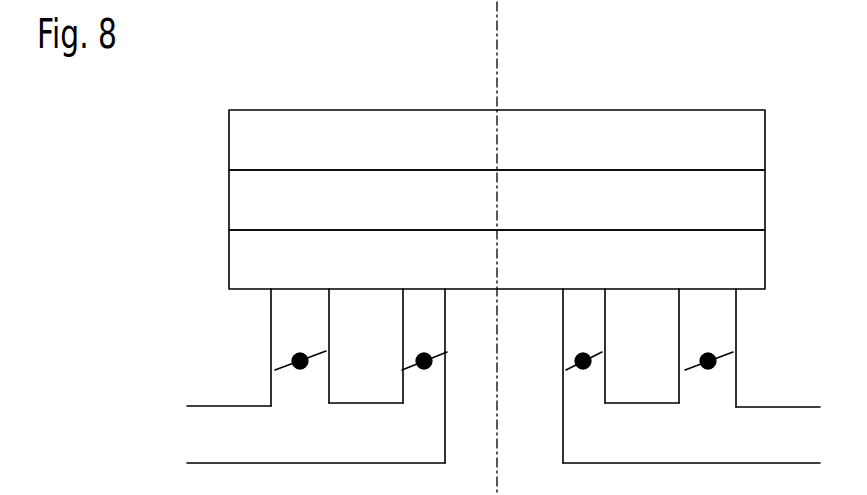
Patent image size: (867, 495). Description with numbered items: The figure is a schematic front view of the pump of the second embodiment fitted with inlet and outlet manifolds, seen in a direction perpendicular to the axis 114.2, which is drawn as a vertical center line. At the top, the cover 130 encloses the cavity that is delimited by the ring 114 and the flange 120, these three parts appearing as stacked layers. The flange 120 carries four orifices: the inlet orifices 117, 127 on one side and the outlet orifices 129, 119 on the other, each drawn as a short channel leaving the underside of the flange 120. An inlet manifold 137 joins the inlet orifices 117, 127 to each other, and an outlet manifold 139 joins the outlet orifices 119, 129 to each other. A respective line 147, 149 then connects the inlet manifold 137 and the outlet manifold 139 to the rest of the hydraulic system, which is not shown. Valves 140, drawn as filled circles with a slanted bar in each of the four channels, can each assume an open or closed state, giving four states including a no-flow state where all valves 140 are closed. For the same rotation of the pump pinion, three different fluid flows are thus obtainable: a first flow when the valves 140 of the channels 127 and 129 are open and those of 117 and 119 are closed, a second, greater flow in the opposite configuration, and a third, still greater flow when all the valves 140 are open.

The axis 114.2 is at (500, 30).
The cover 130 is at (670, 157).
The ring 114 is at (670, 216).
The flange 120 is at (670, 274).
The inlet orifice 117 is at (300, 331).
The inlet orifice 127 is at (424, 360).
The outlet orifice 129 is at (584, 361).
The outlet orifice 119 is at (707, 333).
The line 147 is at (231, 448).
The line 149 is at (812, 452).
The valve 140 is at (400, 367).
The inlet manifold 137 is at (250, 358).
The outlet manifold 139 is at (765, 362).